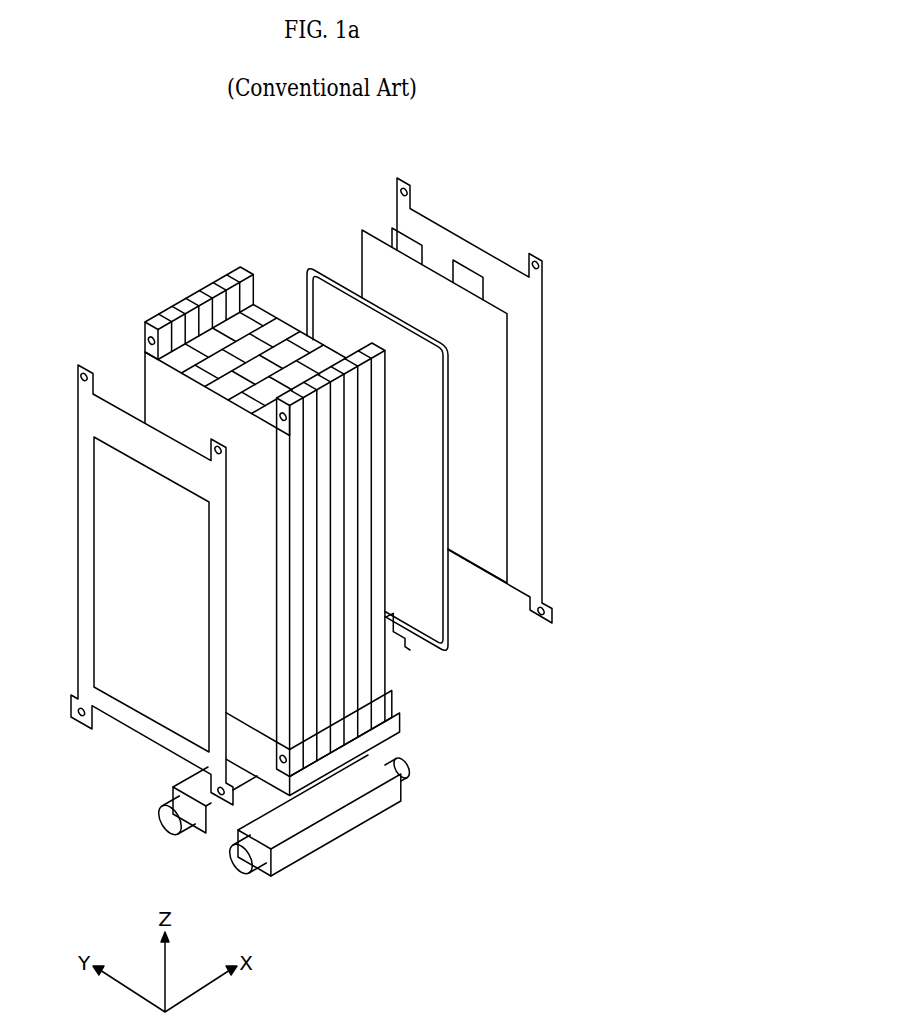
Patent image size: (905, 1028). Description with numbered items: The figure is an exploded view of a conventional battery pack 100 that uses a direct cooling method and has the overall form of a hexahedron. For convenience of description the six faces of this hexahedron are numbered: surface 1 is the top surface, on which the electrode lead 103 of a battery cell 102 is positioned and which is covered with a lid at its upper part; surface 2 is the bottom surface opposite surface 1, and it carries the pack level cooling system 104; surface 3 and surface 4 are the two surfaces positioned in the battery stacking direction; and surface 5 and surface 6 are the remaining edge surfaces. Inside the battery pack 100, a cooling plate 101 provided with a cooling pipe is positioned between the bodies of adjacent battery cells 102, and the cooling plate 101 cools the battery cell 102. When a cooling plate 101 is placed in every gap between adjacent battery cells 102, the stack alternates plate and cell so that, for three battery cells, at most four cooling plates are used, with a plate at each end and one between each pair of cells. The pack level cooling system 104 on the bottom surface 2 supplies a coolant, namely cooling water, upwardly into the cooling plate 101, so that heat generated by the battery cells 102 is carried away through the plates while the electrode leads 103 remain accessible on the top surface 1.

The battery pack 100 is at (496, 193).
The cooling plate 101 is at (330, 315).
The battery cell 102 is at (507, 447).
The electrode lead 103 is at (397, 242).
The pack level cooling system 104 is at (363, 808).
The top surface 1 is at (156, 322).
The bottom surface 2 is at (390, 720).
The surface in battery stacking direction 3 is at (113, 540).
The surface in battery stacking direction 4 is at (545, 333).
The edge surface 5 is at (145, 378).
The edge surface 6 is at (378, 673).